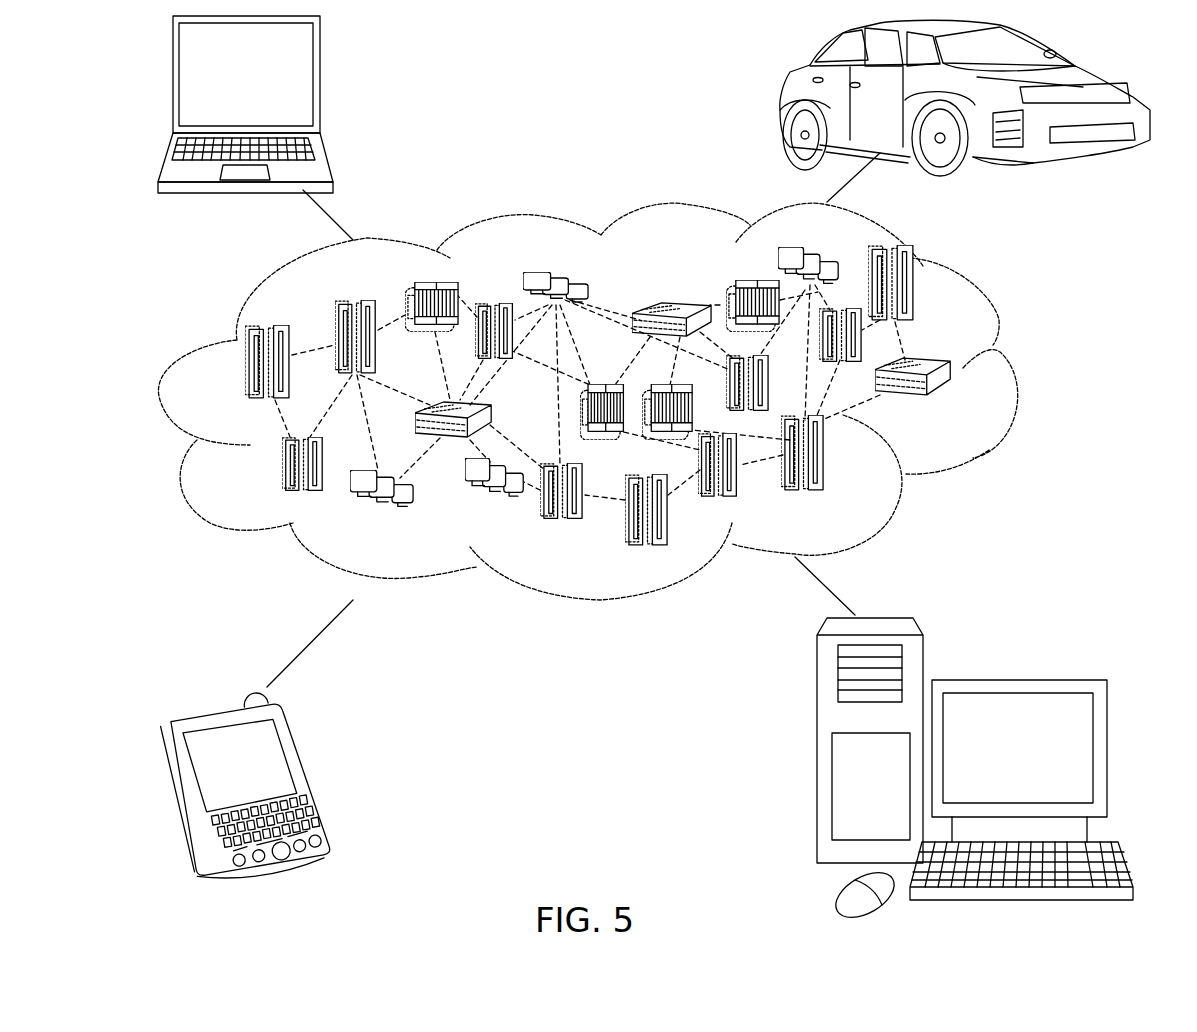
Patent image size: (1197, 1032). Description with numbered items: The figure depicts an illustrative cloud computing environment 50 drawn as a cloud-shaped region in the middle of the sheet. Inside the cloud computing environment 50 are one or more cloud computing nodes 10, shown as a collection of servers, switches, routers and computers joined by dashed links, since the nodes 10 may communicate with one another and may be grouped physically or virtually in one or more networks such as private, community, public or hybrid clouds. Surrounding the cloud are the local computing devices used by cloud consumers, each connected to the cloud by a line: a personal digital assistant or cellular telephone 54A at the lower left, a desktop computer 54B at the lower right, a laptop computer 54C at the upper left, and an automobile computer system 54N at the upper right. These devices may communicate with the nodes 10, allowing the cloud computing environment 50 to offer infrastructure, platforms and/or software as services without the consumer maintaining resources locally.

The cloud computing node 10 is at (960, 407).
The cloud computing environment 50 is at (1013, 372).
The personal digital assistant or cellular telephone 54A is at (307, 782).
The desktop computer 54B is at (1018, 680).
The laptop computer 54C is at (320, 83).
The automobile computer system 54N is at (783, 100).